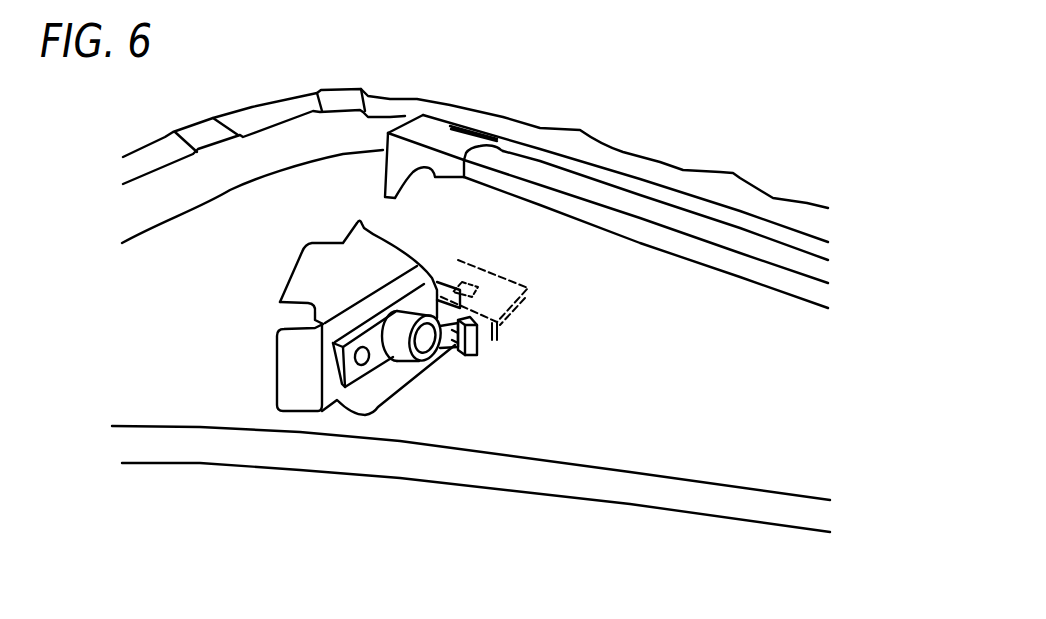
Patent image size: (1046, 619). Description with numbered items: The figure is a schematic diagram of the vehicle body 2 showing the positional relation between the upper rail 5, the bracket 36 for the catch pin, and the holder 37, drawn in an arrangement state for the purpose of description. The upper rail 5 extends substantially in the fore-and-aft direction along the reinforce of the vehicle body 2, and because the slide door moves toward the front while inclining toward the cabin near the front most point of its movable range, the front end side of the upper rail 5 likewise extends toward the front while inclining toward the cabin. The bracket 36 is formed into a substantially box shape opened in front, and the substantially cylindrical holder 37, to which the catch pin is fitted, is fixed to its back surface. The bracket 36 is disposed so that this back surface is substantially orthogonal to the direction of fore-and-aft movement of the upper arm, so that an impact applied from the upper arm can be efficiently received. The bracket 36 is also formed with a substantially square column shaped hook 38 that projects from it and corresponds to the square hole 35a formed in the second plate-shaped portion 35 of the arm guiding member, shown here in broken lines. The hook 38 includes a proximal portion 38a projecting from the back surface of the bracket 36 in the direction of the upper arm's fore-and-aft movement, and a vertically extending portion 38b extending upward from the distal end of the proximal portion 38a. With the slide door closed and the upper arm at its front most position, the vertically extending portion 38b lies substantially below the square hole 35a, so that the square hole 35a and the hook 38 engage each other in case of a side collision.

The vehicle body 2 is at (580, 130).
The upper rail 5 is at (643, 207).
The second plate-shaped portion 35 is at (503, 276).
The square hole 35a is at (465, 283).
The bracket 36 is at (290, 387).
The holder 37 is at (397, 342).
The hook 38 is at (437, 451).
The proximal portion 38a is at (450, 355).
The vertically extending portion 38b is at (476, 358).